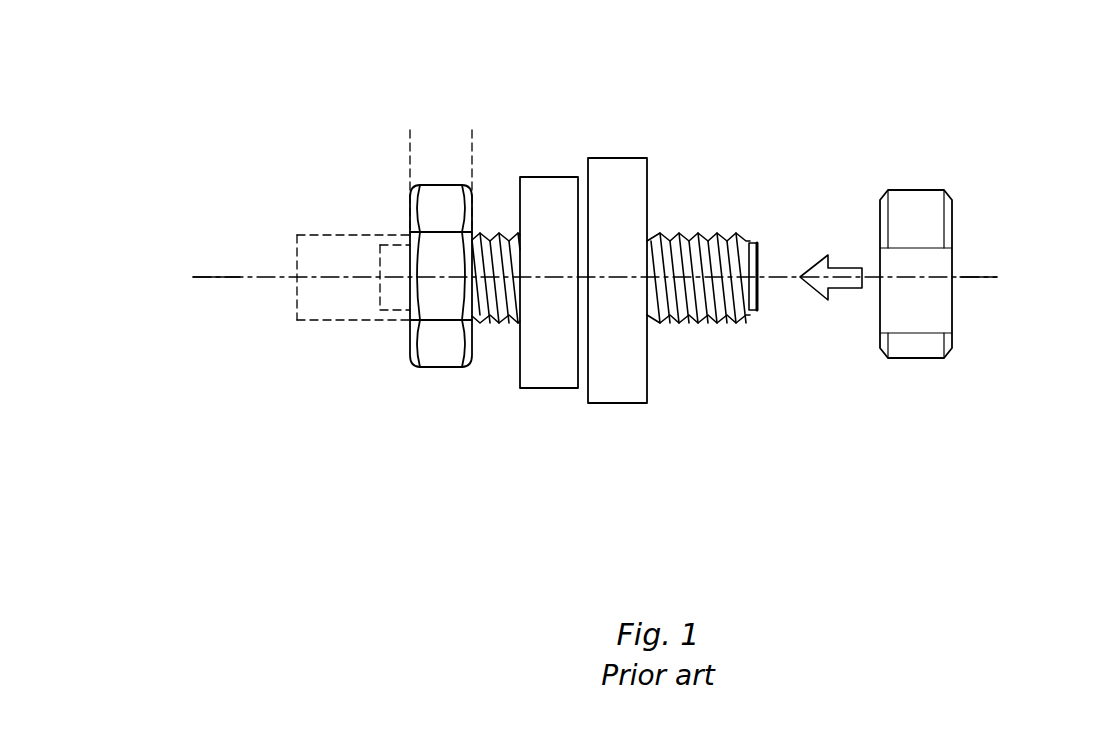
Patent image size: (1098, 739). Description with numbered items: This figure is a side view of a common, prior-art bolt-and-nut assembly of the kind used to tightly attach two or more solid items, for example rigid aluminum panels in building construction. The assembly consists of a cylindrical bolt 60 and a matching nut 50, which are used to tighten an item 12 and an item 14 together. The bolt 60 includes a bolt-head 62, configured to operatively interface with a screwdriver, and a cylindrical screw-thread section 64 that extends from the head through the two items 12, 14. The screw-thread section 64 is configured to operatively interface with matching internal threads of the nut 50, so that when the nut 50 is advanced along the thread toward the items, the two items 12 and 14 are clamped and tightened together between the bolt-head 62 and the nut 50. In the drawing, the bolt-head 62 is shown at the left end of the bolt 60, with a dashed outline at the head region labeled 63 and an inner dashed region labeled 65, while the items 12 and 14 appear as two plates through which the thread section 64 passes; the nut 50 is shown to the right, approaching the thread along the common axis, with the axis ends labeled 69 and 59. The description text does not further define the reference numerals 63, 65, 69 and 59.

The cylindrical bolt 60 is at (351, 156).
The bolt-head 62 is at (408, 132).
The bolt head length 63 is at (297, 235).
The cylindrical screw-thread section 64 is at (752, 132).
The inner head portion 65 is at (380, 245).
The longitudinal axis 69 is at (208, 278).
The item 12 is at (548, 383).
The item 14 is at (623, 390).
The nut 50 is at (977, 176).
The nut axis / tightening direction 59 is at (978, 278).